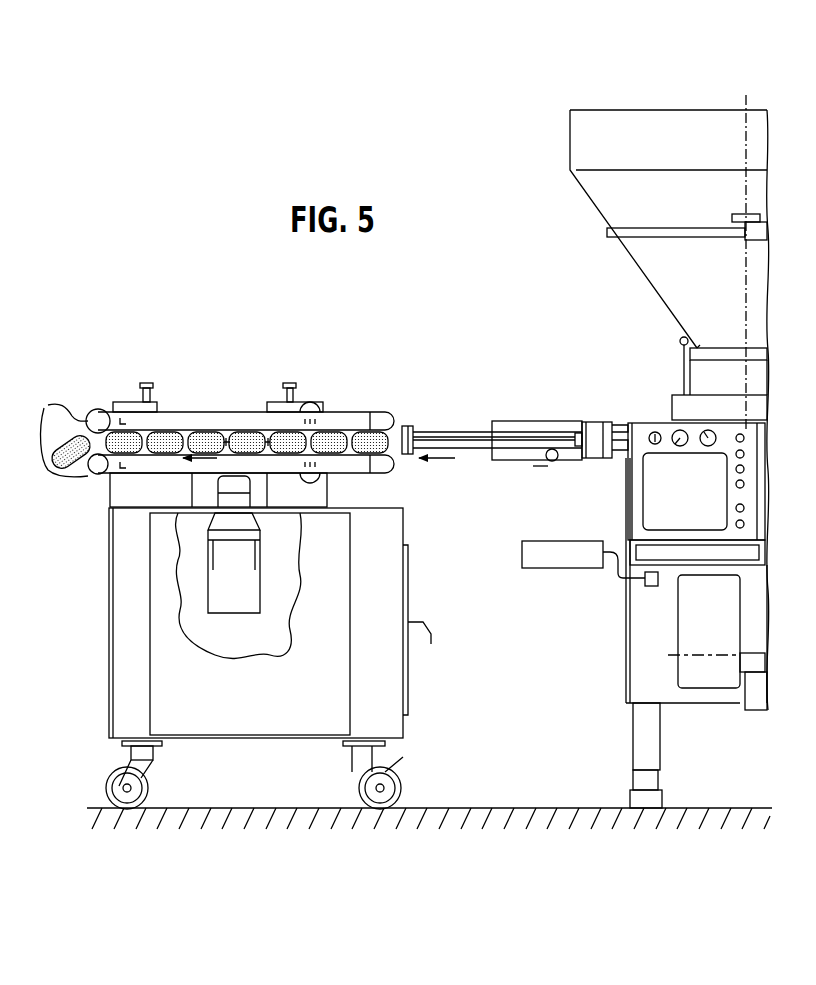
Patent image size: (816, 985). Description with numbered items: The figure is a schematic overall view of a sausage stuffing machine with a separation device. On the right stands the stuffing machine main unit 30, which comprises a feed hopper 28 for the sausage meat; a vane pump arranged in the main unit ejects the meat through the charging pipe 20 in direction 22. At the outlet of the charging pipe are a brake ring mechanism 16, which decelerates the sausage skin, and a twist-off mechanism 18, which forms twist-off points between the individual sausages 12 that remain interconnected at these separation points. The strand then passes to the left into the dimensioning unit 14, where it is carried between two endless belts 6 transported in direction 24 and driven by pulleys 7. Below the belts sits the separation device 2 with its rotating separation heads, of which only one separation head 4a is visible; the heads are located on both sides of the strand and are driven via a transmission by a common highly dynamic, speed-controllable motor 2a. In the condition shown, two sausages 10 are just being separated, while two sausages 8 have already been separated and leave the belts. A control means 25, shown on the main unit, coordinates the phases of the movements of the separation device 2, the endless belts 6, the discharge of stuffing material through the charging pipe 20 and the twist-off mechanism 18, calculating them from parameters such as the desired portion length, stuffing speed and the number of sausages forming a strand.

The separation device 2 is at (199, 613).
The motor 2a is at (225, 582).
The separation head 4a is at (256, 432).
The endless belts 6 is at (200, 428).
The pulleys 7 is at (58, 406).
The separated sausages 8 is at (166, 430).
The sausages being separated 10 is at (228, 430).
The individual sausages 12 is at (356, 455).
The dimensioning unit 14 is at (211, 194).
The brake ring mechanism 16 is at (405, 426).
The twist-off mechanism 18 is at (600, 424).
The charging pipe 20 is at (450, 432).
The ejection direction 22 is at (444, 465).
The transport direction 24 is at (190, 464).
The control means 25 is at (660, 492).
The feed hopper 28 is at (605, 192).
The stuffing machine main unit 30 is at (670, 95).